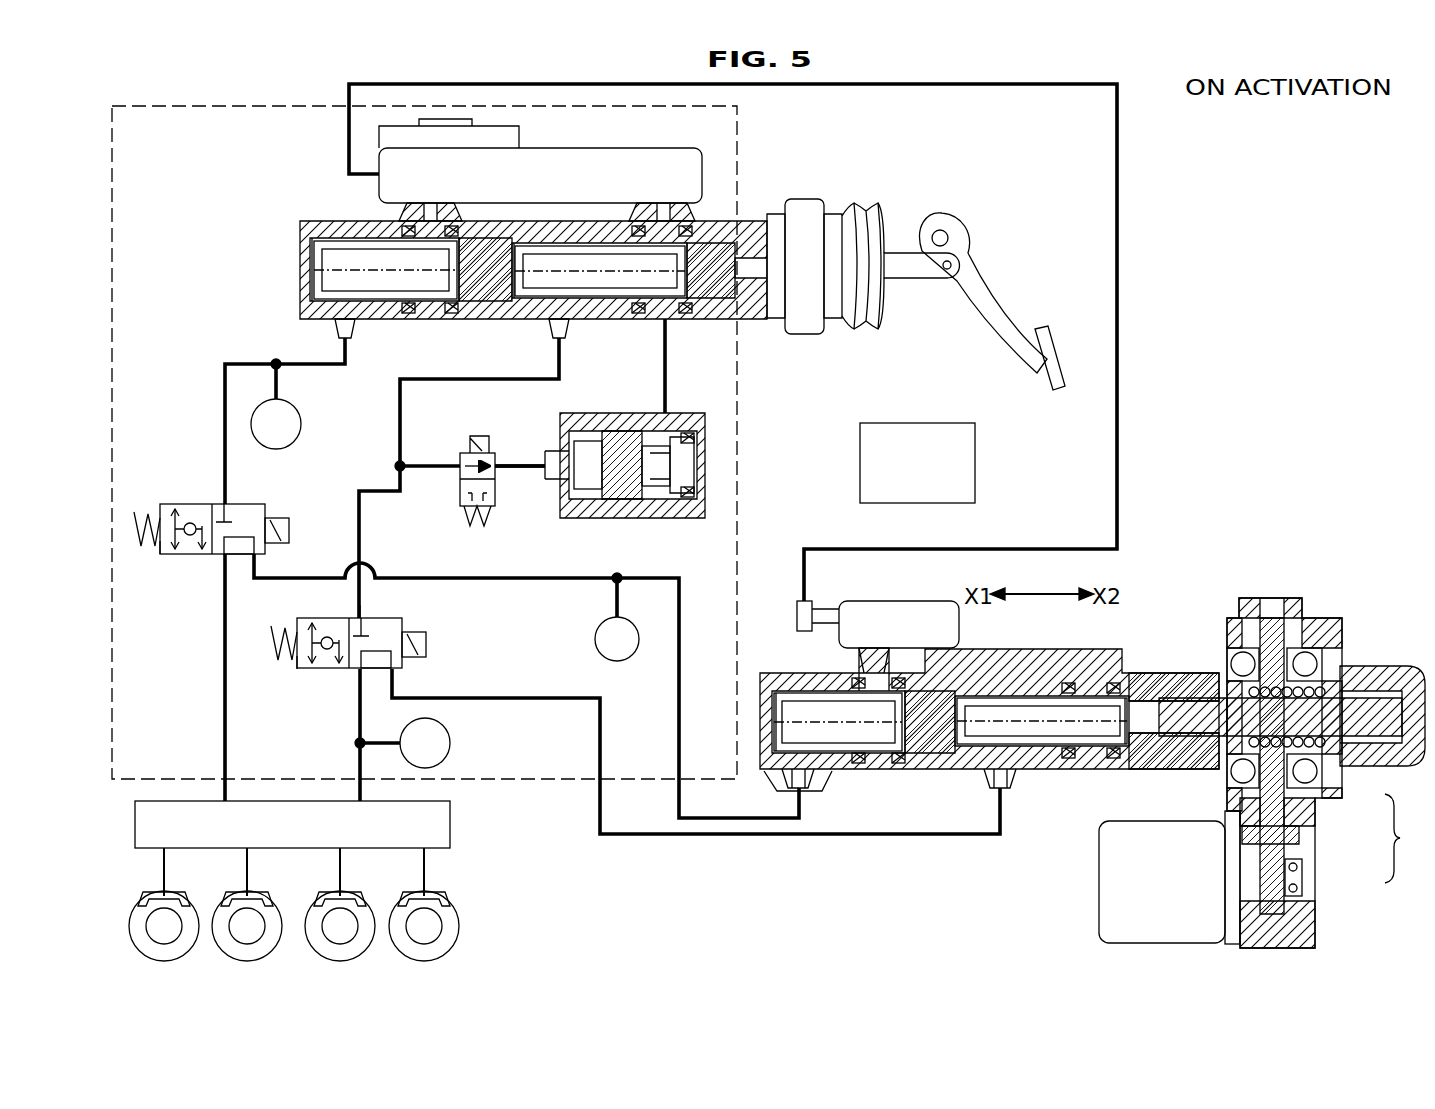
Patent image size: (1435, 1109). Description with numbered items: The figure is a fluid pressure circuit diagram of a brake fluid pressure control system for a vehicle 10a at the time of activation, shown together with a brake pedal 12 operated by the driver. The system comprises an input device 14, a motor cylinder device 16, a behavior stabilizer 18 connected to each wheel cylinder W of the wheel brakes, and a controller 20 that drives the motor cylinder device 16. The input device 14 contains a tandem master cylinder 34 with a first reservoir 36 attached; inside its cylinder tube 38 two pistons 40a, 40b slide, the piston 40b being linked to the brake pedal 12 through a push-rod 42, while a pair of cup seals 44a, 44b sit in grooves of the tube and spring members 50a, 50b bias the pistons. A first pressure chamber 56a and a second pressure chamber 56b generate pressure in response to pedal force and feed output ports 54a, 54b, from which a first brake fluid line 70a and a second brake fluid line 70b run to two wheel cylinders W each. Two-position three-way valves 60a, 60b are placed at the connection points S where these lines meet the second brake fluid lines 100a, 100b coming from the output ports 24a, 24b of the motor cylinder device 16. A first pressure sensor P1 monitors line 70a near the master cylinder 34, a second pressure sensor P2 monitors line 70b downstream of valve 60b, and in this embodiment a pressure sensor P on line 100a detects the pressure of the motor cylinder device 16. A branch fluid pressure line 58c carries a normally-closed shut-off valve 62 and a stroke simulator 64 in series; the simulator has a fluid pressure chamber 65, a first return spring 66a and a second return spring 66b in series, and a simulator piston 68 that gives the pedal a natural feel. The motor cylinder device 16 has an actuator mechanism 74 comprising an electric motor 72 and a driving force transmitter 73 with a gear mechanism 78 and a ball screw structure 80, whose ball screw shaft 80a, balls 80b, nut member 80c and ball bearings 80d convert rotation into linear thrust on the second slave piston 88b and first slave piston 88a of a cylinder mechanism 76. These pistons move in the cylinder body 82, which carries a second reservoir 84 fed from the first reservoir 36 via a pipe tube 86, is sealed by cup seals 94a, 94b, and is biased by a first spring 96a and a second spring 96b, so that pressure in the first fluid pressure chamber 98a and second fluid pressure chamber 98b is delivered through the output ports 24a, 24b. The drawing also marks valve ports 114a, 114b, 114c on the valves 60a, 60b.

The brake fluid pressure control system for a vehicle 10a is at (1176, 187).
The brake pedal 12 is at (1058, 336).
The input device 14 is at (737, 400).
The motor cylinder device 16 is at (1364, 588).
The behavior stabilizer 18 is at (449, 822).
The controller 20 is at (974, 461).
The output port 24a is at (793, 790).
The output port 24b is at (993, 790).
The tandem master cylinder 34 is at (717, 220).
The first reservoir 36 is at (537, 146).
The cylinder tube 38 is at (742, 226).
The piston 40a is at (488, 266).
The piston 40b is at (710, 266).
The push-rod 42 is at (905, 278).
The cup seal 44a is at (407, 314).
The cup seal 44b is at (450, 314).
The spring member 50a is at (595, 300).
The spring member 50b is at (300, 279).
The output port 54a is at (345, 341).
The output port 54b is at (555, 336).
The first pressure chamber 56a is at (355, 262).
The second pressure chamber 56b is at (610, 265).
The branch fluid pressure line 58c is at (518, 468).
The two-position three-way valve 60a is at (255, 505).
The two-position three-way valve 60b is at (397, 620).
The shut-off valve 62 is at (458, 483).
The stroke simulator 64 is at (705, 452).
The fluid pressure chamber 65 is at (590, 498).
The first return spring 66a is at (683, 514).
The second return spring 66b is at (635, 516).
The simulator piston 68 is at (612, 446).
The first brake fluid line 70a is at (220, 711).
The second brake fluid line 70b is at (354, 711).
The electric motor 72 is at (1097, 882).
The driving force transmitter 73 is at (1406, 838).
The actuator mechanism 74 is at (1418, 665).
The cylinder mechanism 76 is at (758, 680).
The gear mechanism 78 is at (1285, 845).
The ball screw structure 80 is at (1356, 738).
The ball screw shaft 80a is at (1362, 690).
The balls 80b is at (1230, 648).
The nut member 80c is at (1312, 648).
The ball bearings 80d is at (1237, 805).
The cylinder body 82 is at (820, 775).
The second reservoir 84 is at (880, 600).
The pipe tube 86 is at (1117, 366).
The first slave piston 88a is at (932, 758).
The second slave piston 88b is at (1132, 768).
The cup seal 94a is at (1066, 681).
The cup seal 94b is at (1110, 681).
The first spring 96a is at (785, 718).
The second spring 96b is at (1128, 692).
The first fluid pressure chamber 98a is at (815, 716).
The second fluid pressure chamber 98b is at (1020, 730).
The second brake fluid line 100a is at (549, 581).
The second brake fluid line 100b is at (664, 836).
The valve port 114a is at (224, 503).
The valve port 114b is at (212, 556).
The valve port 114c is at (256, 554).
The pressure sensor P is at (617, 639).
The first pressure sensor P1 is at (276, 424).
The second pressure sensor P2 is at (425, 743).
The connection points S is at (208, 490).
The wheel cylinder W is at (168, 887).